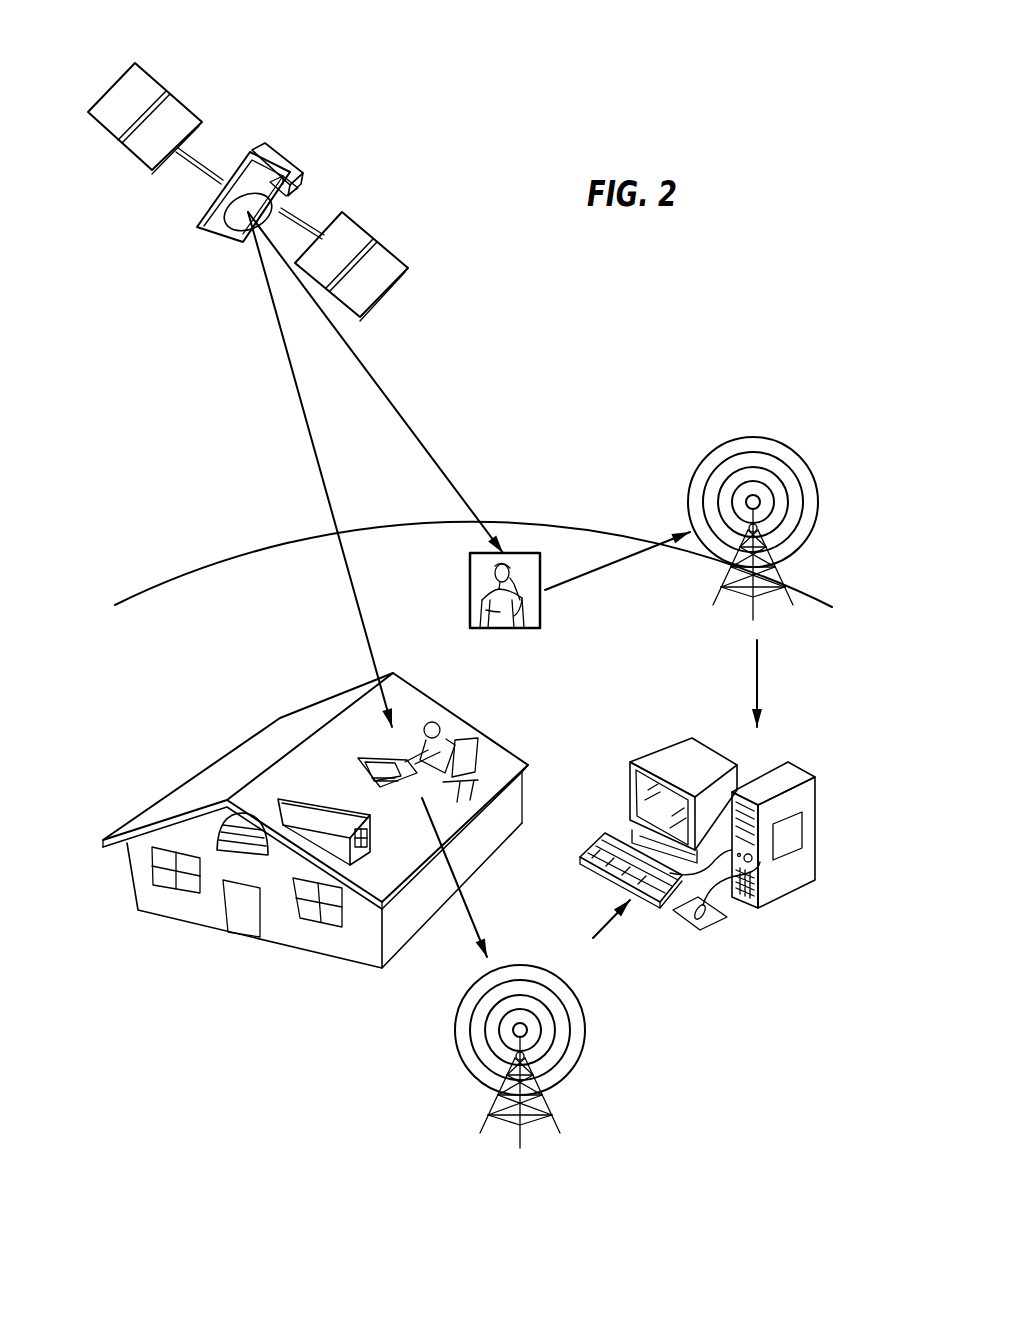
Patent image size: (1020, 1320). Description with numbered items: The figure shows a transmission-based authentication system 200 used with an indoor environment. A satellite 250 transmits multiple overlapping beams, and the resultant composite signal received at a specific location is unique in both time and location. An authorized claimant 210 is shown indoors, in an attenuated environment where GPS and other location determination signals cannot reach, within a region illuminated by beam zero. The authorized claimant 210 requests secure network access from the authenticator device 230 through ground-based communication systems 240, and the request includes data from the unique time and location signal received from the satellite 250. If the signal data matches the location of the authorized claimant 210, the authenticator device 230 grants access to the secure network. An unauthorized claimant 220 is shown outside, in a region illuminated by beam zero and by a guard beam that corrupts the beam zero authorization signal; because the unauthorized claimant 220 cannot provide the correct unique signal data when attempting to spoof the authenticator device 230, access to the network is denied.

The authentication system 200 is at (300, 1054).
The authorized claimant 210 is at (434, 695).
The unauthorized claimant 220 is at (526, 546).
The authenticator device 230 is at (667, 725).
The ground-based communication systems 240 is at (768, 428).
The satellite 250 is at (207, 254).